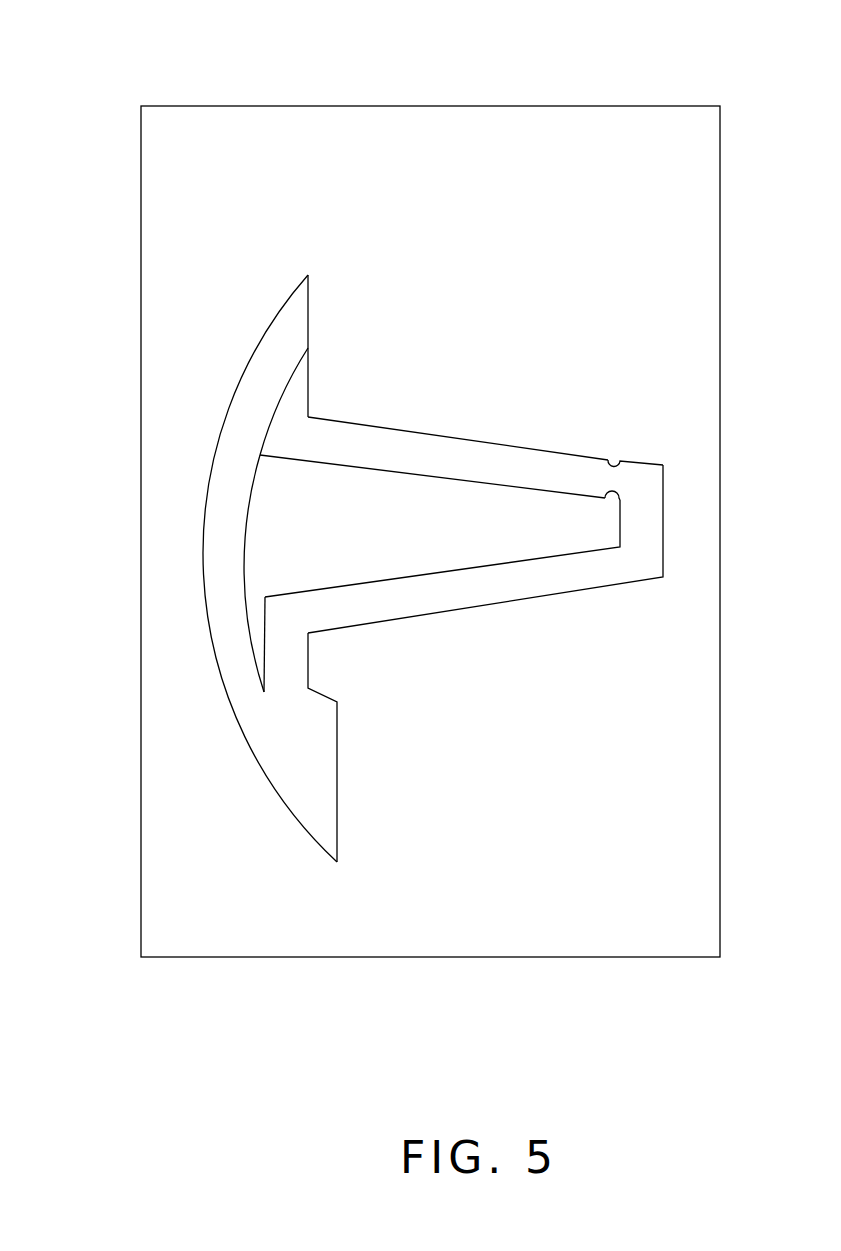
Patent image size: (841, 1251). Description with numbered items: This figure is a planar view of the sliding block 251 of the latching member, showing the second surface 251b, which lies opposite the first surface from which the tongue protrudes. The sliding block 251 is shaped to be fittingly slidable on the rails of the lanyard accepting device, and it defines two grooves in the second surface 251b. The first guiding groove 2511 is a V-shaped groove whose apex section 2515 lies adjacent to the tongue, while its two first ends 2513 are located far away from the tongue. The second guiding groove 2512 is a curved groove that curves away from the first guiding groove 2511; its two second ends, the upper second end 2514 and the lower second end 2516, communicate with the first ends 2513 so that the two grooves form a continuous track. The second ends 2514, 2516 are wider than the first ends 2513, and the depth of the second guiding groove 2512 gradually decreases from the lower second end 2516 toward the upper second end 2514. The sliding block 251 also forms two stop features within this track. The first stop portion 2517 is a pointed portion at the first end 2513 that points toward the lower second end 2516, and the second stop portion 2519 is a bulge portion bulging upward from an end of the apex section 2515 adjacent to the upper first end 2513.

The sliding block 251 is at (429, 440).
The second surface 251b is at (687, 304).
The first guiding groove 2511 is at (533, 585).
The second guiding groove 2512 is at (217, 600).
The first ends 2513 is at (288, 428).
The second end 2514 is at (308, 313).
The apex section 2515 is at (637, 528).
The second end 2516 is at (337, 768).
The first stop portion 2517 is at (263, 660).
The second stop portion 2519 is at (617, 462).